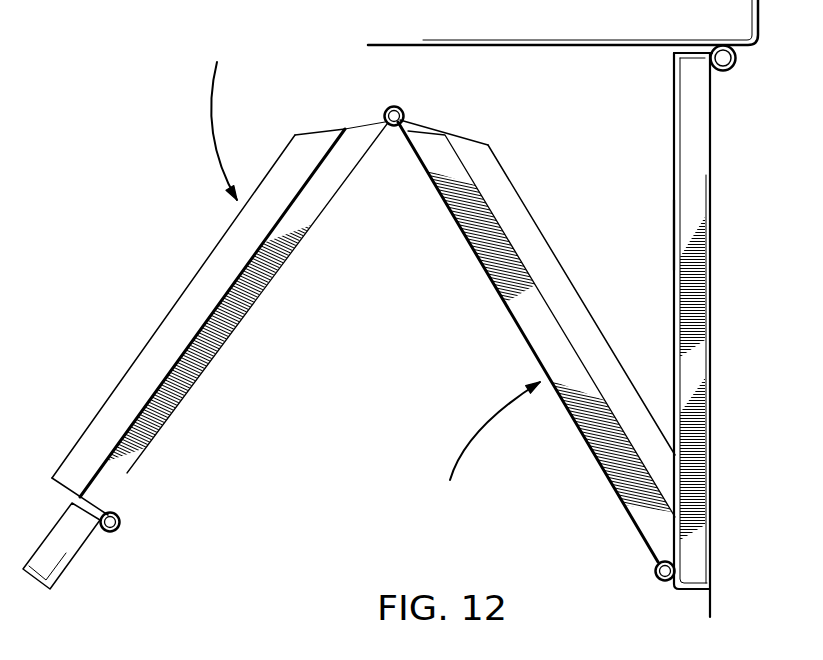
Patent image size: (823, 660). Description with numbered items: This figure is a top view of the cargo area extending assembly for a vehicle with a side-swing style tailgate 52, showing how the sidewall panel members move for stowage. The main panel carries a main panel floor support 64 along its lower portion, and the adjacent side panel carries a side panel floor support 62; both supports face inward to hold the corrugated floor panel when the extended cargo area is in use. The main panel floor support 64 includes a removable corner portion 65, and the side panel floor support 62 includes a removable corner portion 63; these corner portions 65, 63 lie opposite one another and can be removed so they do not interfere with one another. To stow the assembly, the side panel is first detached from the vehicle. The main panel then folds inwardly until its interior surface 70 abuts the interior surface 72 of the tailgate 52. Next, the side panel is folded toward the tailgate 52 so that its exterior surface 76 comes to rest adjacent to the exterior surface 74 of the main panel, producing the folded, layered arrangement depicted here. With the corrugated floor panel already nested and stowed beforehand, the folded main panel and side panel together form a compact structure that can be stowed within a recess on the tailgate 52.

The tailgate 52 is at (697, 150).
The side panel floor support 62 is at (295, 143).
The removable corner portion 63 is at (322, 123).
The main panel floor support 64 is at (522, 219).
The removable corner portion 65 is at (468, 135).
The interior surface 70 is at (550, 305).
The interior surface 72 is at (673, 232).
The exterior surface 74 is at (502, 308).
The exterior surface 76 is at (270, 293).